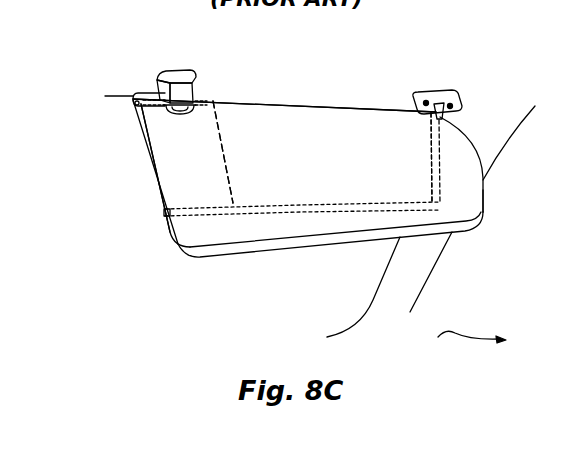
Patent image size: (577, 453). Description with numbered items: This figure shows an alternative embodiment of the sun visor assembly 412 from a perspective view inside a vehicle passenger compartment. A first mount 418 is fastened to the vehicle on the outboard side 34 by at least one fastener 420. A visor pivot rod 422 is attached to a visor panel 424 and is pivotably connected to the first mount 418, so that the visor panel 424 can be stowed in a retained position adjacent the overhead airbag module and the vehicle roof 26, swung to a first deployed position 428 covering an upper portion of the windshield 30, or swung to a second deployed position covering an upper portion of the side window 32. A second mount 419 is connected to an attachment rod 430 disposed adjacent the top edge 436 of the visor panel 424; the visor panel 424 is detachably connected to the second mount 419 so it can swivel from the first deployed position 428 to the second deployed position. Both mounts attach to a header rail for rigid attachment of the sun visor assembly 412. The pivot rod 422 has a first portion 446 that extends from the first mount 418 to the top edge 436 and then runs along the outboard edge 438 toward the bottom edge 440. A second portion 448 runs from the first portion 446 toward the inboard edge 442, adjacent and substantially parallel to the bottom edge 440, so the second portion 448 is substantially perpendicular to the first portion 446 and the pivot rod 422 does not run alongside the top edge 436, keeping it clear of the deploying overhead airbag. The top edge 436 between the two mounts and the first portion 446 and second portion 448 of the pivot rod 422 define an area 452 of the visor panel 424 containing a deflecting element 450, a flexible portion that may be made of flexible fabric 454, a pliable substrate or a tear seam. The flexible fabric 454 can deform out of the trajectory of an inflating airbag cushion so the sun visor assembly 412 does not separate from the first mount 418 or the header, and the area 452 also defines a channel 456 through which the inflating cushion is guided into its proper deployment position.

The sun visor assembly 412 is at (398, 50).
The second mount 419 is at (168, 72).
The attachment rod 430 is at (135, 95).
The top edge 436 is at (232, 98).
The vehicle roof 26 is at (303, 78).
The deflecting element 450 is at (311, 135).
The flexible fabric 454 is at (322, 115).
The first mount 418 is at (450, 91).
The fastener 420 is at (460, 105).
The visor panel 424 is at (156, 132).
The first portion 446 is at (442, 147).
The area 452 is at (326, 152).
The channel 456 is at (358, 167).
The first deployed position 428 is at (167, 165).
The outboard edge 438 is at (484, 192).
The inboard edge 442 is at (160, 191).
The side window 32 is at (540, 259).
The visor pivot rod 422 is at (445, 205).
The bottom edge 440 is at (230, 247).
The windshield 30 is at (286, 302).
The second portion 448 is at (325, 210).
The outboard side 34 is at (459, 340).